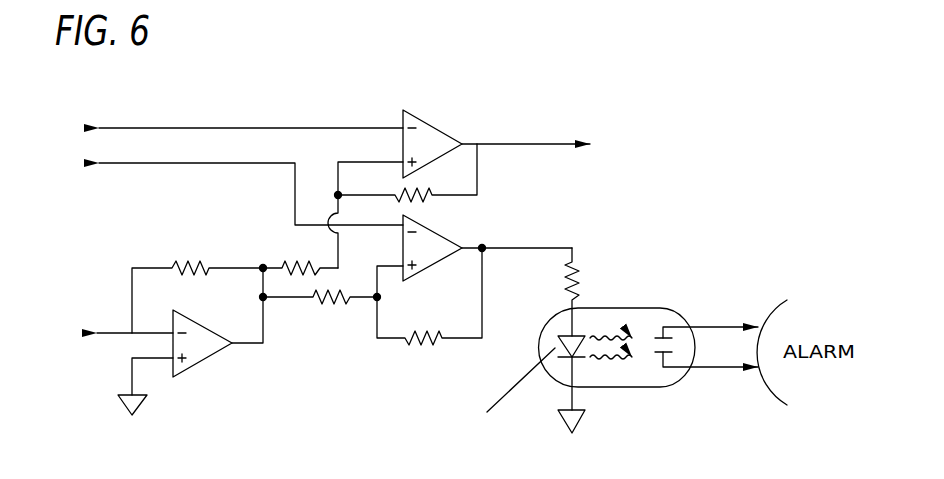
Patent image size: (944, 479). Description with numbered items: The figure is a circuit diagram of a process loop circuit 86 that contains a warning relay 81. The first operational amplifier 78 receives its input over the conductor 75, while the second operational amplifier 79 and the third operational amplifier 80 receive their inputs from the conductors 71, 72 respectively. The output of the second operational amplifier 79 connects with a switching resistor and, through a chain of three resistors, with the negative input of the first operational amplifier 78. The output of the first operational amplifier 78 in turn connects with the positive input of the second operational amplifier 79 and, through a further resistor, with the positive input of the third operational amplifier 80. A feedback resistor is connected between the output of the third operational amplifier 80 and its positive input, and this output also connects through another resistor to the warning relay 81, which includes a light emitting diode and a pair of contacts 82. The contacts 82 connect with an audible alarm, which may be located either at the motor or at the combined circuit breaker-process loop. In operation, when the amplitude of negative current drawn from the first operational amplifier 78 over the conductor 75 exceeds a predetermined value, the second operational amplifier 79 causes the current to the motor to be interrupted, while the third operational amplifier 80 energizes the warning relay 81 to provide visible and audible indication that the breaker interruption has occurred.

The conductor 71 is at (218, 130).
The conductor 72 is at (218, 190).
The conductor 75 is at (114, 334).
The first operational amplifier 78 is at (198, 363).
The second operational amplifier 79 is at (430, 123).
The third operational amplifier 80 is at (440, 237).
The warning relay 81 is at (599, 342).
The pair of contacts 82 is at (643, 302).
The process loop circuit 86 is at (340, 268).